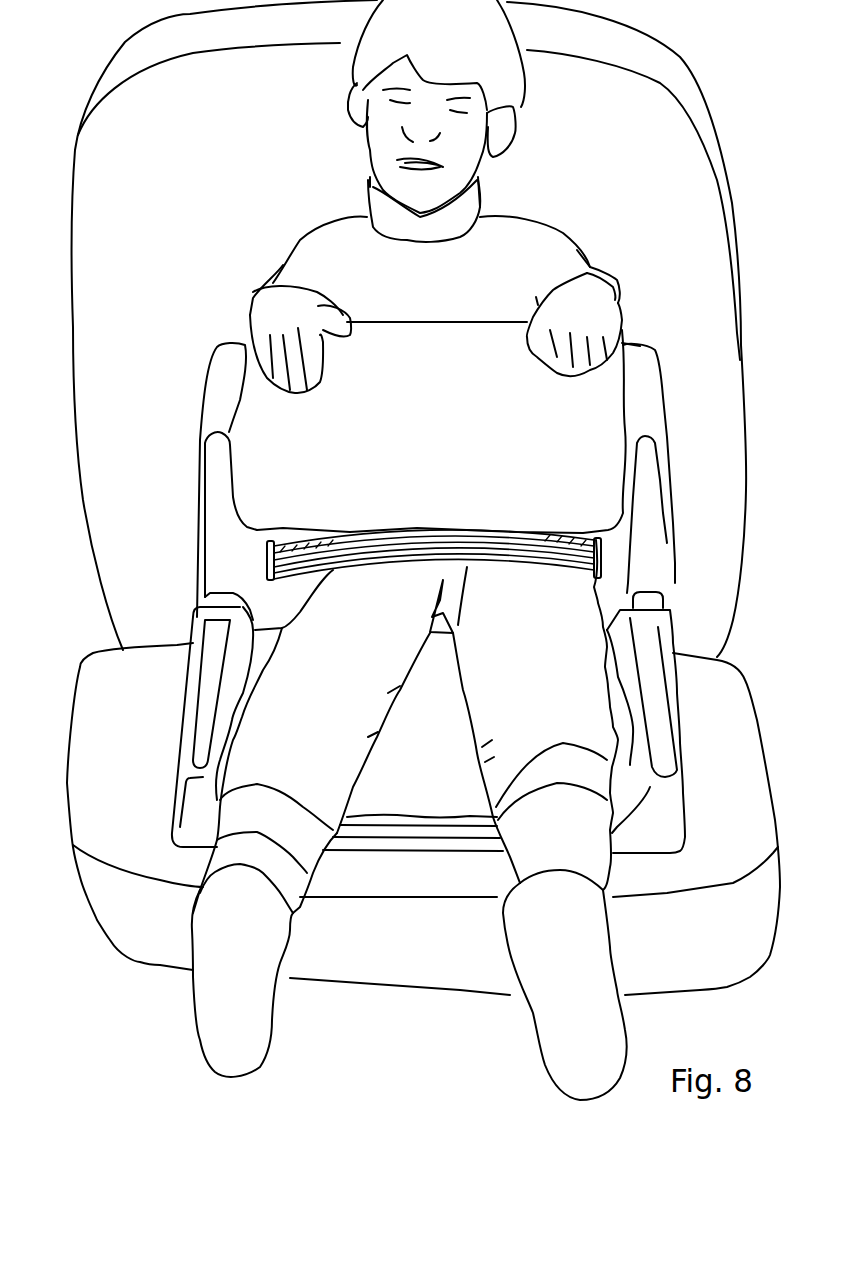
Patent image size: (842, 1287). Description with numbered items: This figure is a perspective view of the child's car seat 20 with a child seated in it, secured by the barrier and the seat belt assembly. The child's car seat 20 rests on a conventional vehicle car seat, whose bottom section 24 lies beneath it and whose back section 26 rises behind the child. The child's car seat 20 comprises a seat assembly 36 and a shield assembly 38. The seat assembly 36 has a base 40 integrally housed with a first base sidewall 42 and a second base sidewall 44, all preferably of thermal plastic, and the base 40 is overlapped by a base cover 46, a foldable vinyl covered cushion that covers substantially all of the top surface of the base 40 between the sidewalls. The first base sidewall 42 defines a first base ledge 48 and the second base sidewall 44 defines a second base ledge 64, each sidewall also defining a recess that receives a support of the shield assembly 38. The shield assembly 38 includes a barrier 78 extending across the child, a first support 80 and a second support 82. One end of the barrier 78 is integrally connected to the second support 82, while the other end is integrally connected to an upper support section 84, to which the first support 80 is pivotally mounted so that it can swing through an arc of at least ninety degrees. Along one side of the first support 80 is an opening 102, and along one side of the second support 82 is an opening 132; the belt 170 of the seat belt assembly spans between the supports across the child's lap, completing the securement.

The child's car seat 20 is at (170, 399).
The bottom section 24 is at (137, 788).
The back section 26 is at (198, 207).
The seat assembly 36 is at (690, 690).
The shield assembly 38 is at (680, 439).
The base 40 is at (394, 866).
The first base sidewall 42 is at (675, 628).
The second base sidewall 44 is at (190, 670).
The base cover 46 is at (448, 762).
The first base ledge 48 is at (663, 737).
The second base ledge 64 is at (207, 697).
The barrier 78 is at (442, 446).
The first support 80 is at (662, 587).
The second support 82 is at (190, 591).
The upper support section 84 is at (670, 470).
The opening 102 is at (602, 553).
The opening 132 is at (266, 557).
The belt 170 is at (550, 540).